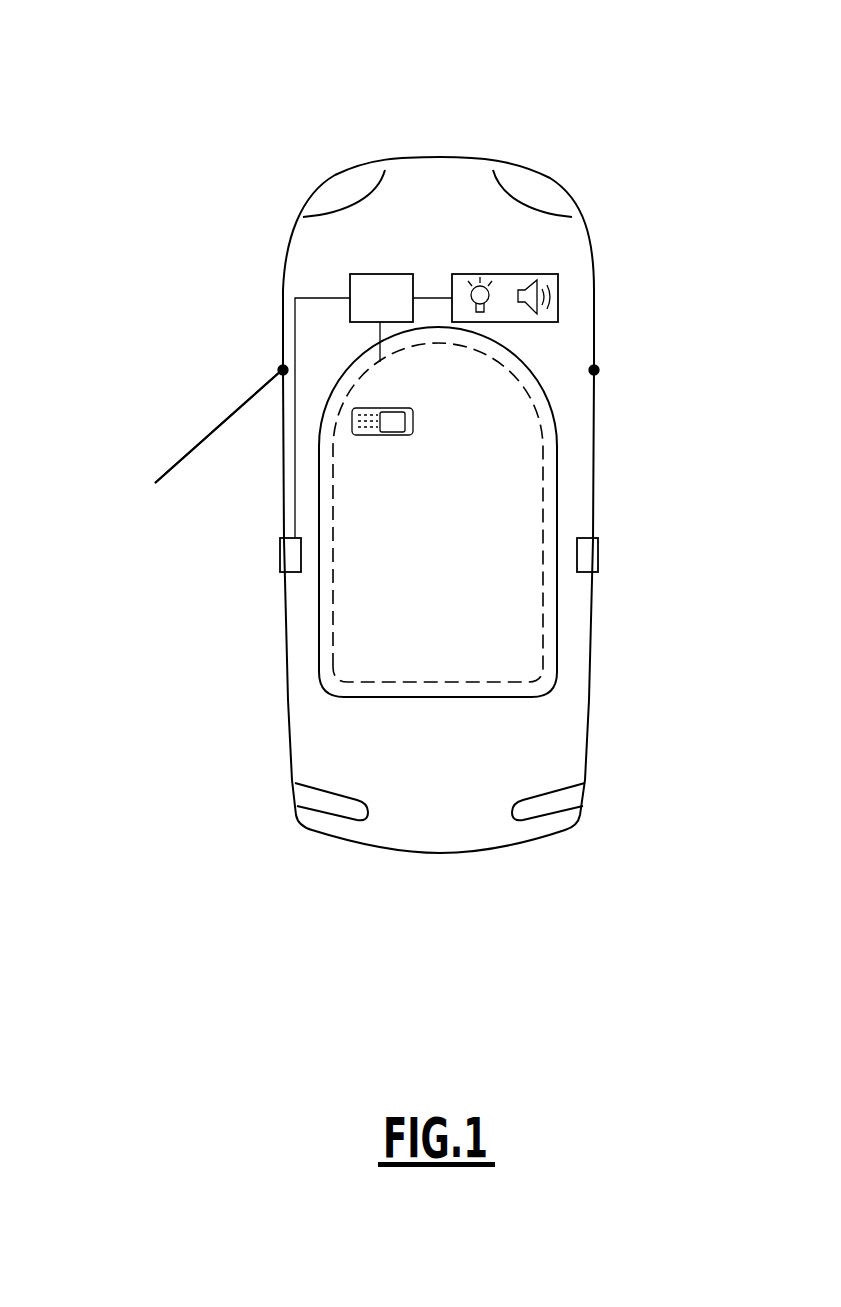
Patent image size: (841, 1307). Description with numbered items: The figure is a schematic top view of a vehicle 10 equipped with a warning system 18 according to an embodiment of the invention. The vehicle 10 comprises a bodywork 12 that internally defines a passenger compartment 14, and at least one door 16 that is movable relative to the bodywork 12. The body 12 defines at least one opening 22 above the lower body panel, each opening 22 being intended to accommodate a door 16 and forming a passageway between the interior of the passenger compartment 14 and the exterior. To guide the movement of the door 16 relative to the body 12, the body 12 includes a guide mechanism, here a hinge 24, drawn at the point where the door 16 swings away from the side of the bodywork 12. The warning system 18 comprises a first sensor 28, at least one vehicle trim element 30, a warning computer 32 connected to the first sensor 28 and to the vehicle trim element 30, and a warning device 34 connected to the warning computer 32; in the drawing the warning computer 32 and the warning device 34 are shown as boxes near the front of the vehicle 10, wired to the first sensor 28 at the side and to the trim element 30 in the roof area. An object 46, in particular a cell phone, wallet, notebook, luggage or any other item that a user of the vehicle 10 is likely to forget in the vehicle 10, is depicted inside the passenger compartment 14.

The vehicle 10 is at (273, 102).
The bodywork 12 is at (240, 193).
The passenger compartment 14 is at (357, 727).
The door 16 is at (185, 455).
The warning system 18 is at (603, 220).
The opening 22 is at (223, 490).
The hinge 24 is at (275, 365).
The first sensor 28 is at (290, 557).
The vehicle trim element 30 is at (500, 478).
The warning computer 32 is at (395, 283).
The warning device 34 is at (515, 283).
The object 46 is at (413, 420).